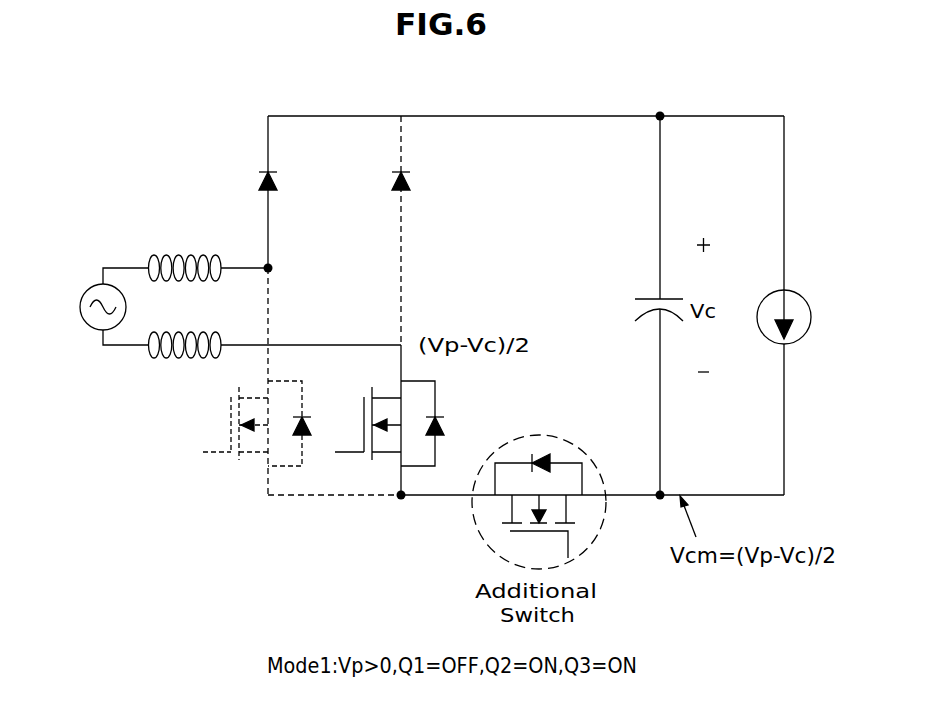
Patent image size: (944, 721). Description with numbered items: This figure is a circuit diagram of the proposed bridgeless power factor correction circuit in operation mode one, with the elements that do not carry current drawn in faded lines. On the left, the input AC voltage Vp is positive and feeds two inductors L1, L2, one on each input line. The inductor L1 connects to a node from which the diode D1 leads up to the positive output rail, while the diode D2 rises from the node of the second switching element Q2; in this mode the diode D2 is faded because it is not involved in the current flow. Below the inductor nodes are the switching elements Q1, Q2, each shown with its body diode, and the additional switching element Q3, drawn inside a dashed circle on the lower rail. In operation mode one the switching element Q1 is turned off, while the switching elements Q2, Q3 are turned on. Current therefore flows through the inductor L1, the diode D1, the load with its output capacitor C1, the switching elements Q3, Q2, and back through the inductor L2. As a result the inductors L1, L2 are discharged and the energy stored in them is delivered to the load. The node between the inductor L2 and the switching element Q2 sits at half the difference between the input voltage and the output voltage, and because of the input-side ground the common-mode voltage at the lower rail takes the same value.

The diode D1 is at (283, 182).
The diode D2 is at (418, 230).
The inductor L1 is at (209, 255).
The inductor L2 is at (275, 329).
The switching element Q1 is at (252, 423).
The switching element Q2 is at (386, 420).
The switching element Q3 is at (539, 502).
The output capacitor C1 is at (644, 305).
The input AC voltage Vp is at (98, 306).